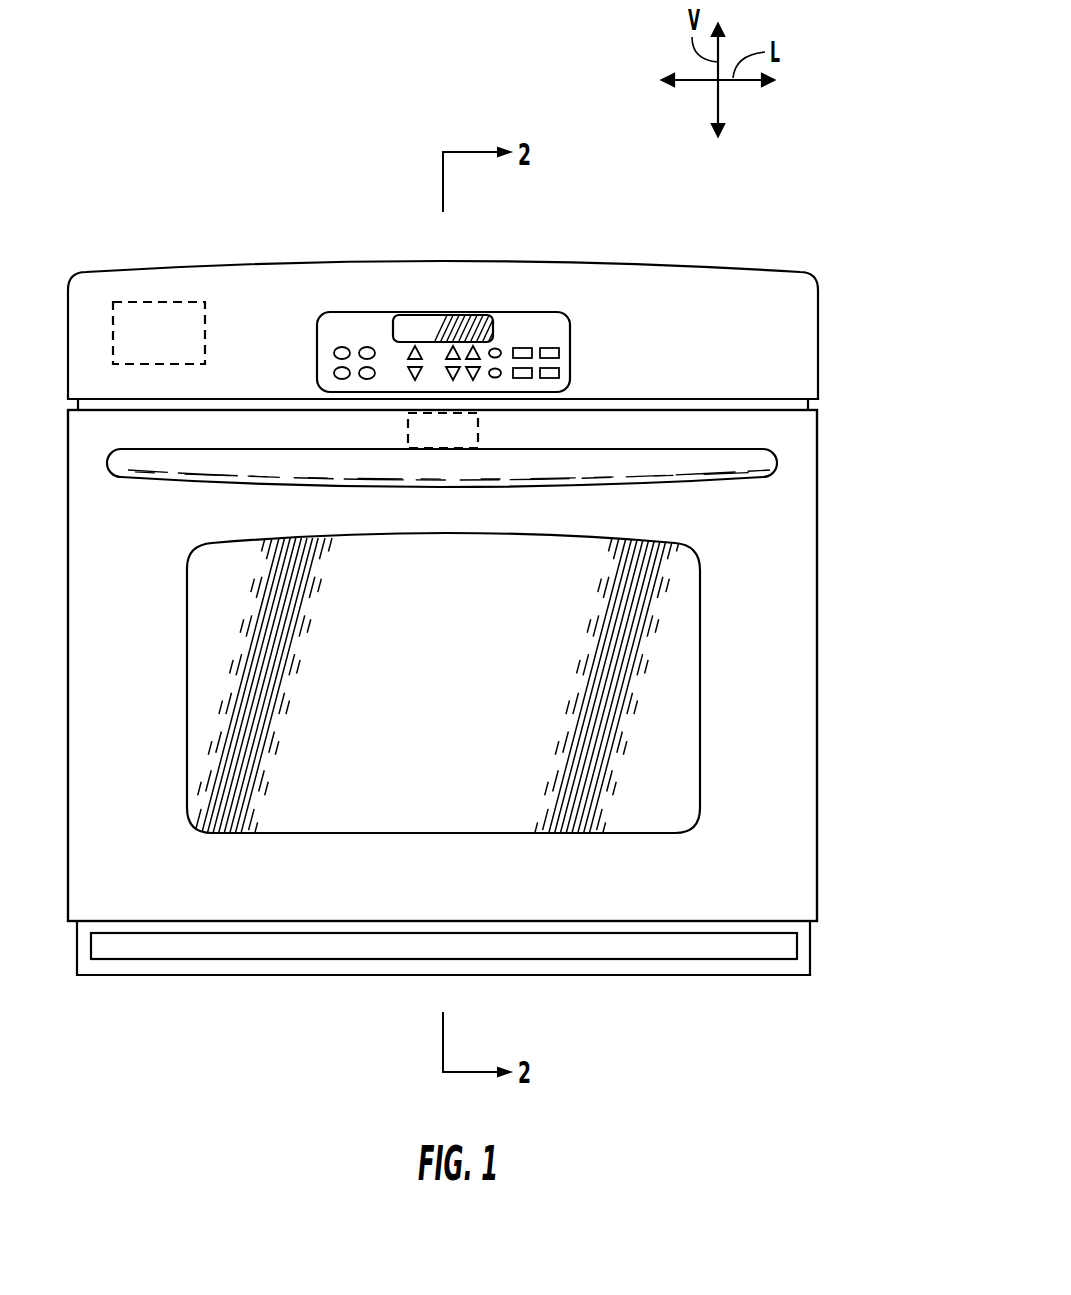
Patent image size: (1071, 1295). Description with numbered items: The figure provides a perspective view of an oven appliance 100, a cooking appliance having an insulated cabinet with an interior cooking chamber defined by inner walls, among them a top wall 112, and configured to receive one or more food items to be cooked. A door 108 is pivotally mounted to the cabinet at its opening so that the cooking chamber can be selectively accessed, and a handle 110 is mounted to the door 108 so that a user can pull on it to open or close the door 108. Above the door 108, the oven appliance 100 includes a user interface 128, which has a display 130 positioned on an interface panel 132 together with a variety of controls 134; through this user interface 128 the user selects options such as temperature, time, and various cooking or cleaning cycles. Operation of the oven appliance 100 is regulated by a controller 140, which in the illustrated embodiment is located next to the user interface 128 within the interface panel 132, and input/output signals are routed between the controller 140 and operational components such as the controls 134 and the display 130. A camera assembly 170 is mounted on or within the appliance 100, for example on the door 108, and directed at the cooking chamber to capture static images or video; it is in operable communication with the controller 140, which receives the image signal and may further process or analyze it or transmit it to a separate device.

The oven appliance 100 is at (140, 104).
The door 108 is at (768, 600).
The handle 110 is at (763, 462).
The top wall 112 is at (684, 713).
The user interface 128 is at (525, 327).
The display 130 is at (432, 328).
The interface panel 132 is at (735, 288).
The controls 134 is at (342, 348).
The controller 140 is at (160, 300).
The camera assembly 170 is at (478, 432).